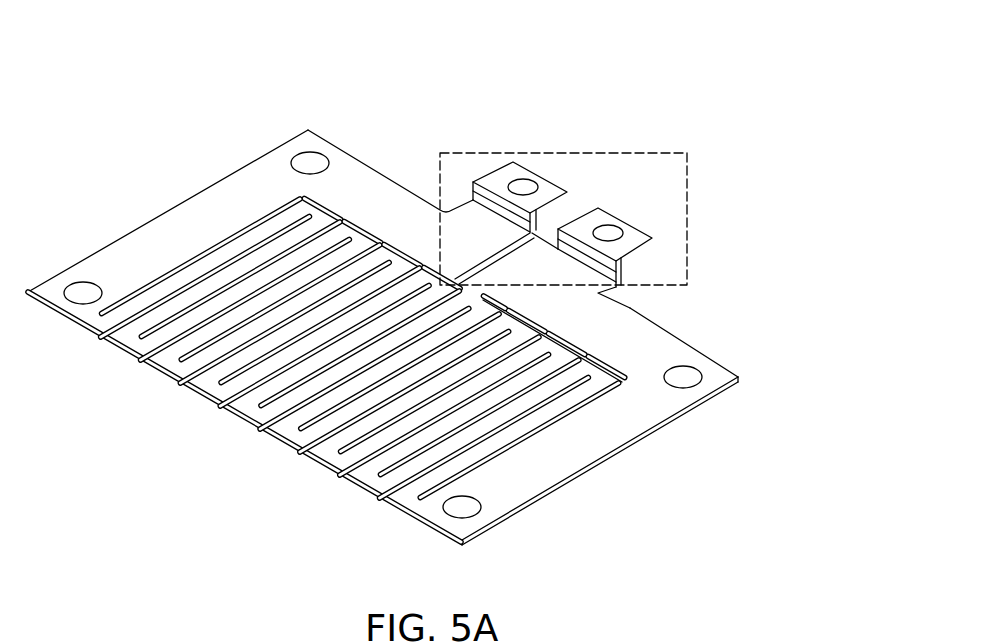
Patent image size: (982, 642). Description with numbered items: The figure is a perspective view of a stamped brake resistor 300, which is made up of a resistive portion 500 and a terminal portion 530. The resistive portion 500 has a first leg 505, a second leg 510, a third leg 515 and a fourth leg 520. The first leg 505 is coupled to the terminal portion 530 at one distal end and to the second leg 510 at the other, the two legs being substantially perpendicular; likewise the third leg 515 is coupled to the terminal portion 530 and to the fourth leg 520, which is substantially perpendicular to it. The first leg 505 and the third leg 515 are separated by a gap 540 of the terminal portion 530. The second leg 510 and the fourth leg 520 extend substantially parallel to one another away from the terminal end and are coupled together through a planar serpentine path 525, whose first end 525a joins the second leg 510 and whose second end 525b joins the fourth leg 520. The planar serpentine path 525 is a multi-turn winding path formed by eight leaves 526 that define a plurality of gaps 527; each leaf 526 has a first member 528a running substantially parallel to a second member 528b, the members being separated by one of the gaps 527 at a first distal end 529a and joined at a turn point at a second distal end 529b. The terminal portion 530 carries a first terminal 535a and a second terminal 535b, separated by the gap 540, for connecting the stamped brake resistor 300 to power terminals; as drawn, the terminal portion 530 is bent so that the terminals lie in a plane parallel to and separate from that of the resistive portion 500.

The stamped brake resistor 300 is at (148, 91).
The resistive portion 500 is at (780, 369).
The first leg 505 is at (357, 198).
The second leg 510 is at (118, 263).
The third leg 515 is at (672, 345).
The fourth leg 520 is at (495, 490).
The planar serpentine path 525 is at (232, 437).
The first end of the planar serpentine path 525a is at (93, 312).
The second end of the planar serpentine path 525b is at (422, 505).
The leaf 526 is at (603, 295).
The gap 527 is at (203, 305).
The first member 528a is at (243, 247).
The second member 528b is at (262, 257).
The first distal end 529a is at (107, 340).
The second distal end 529b is at (315, 200).
The terminal portion 530 is at (585, 145).
The first terminal 535a is at (527, 175).
The second terminal 535b is at (643, 248).
The gap 540 is at (526, 256).